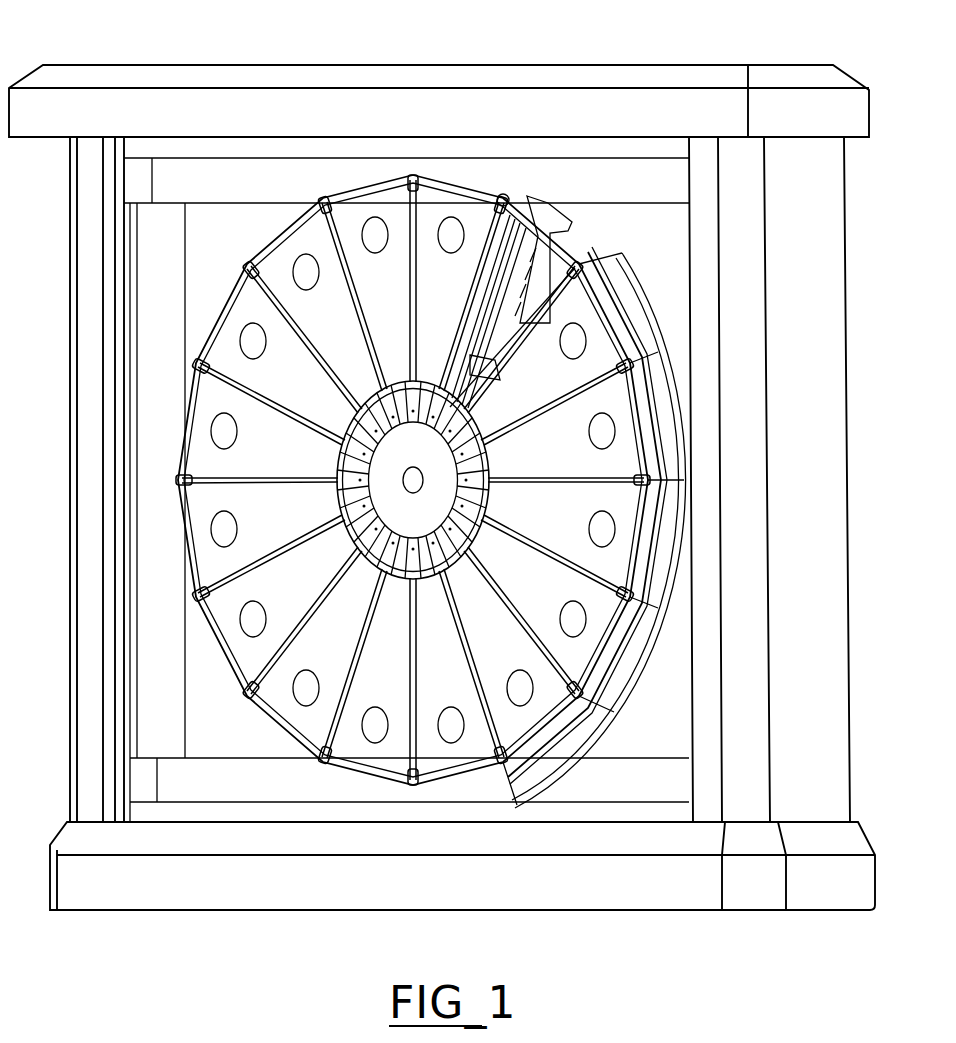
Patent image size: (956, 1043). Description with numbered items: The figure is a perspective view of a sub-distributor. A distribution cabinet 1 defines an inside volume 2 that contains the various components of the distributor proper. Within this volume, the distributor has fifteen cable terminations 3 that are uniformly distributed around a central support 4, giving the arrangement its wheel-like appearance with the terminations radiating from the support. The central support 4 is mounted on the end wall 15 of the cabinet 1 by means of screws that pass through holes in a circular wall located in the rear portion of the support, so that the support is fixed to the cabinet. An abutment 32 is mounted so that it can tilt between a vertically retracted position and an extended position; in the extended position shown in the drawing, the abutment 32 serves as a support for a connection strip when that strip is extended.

The distribution cabinet 1 is at (823, 217).
The inside volume 2 is at (198, 257).
The cable termination 3 is at (498, 170).
The central support 4 is at (380, 476).
The end wall 15 is at (640, 215).
The abutment 32 is at (451, 205).